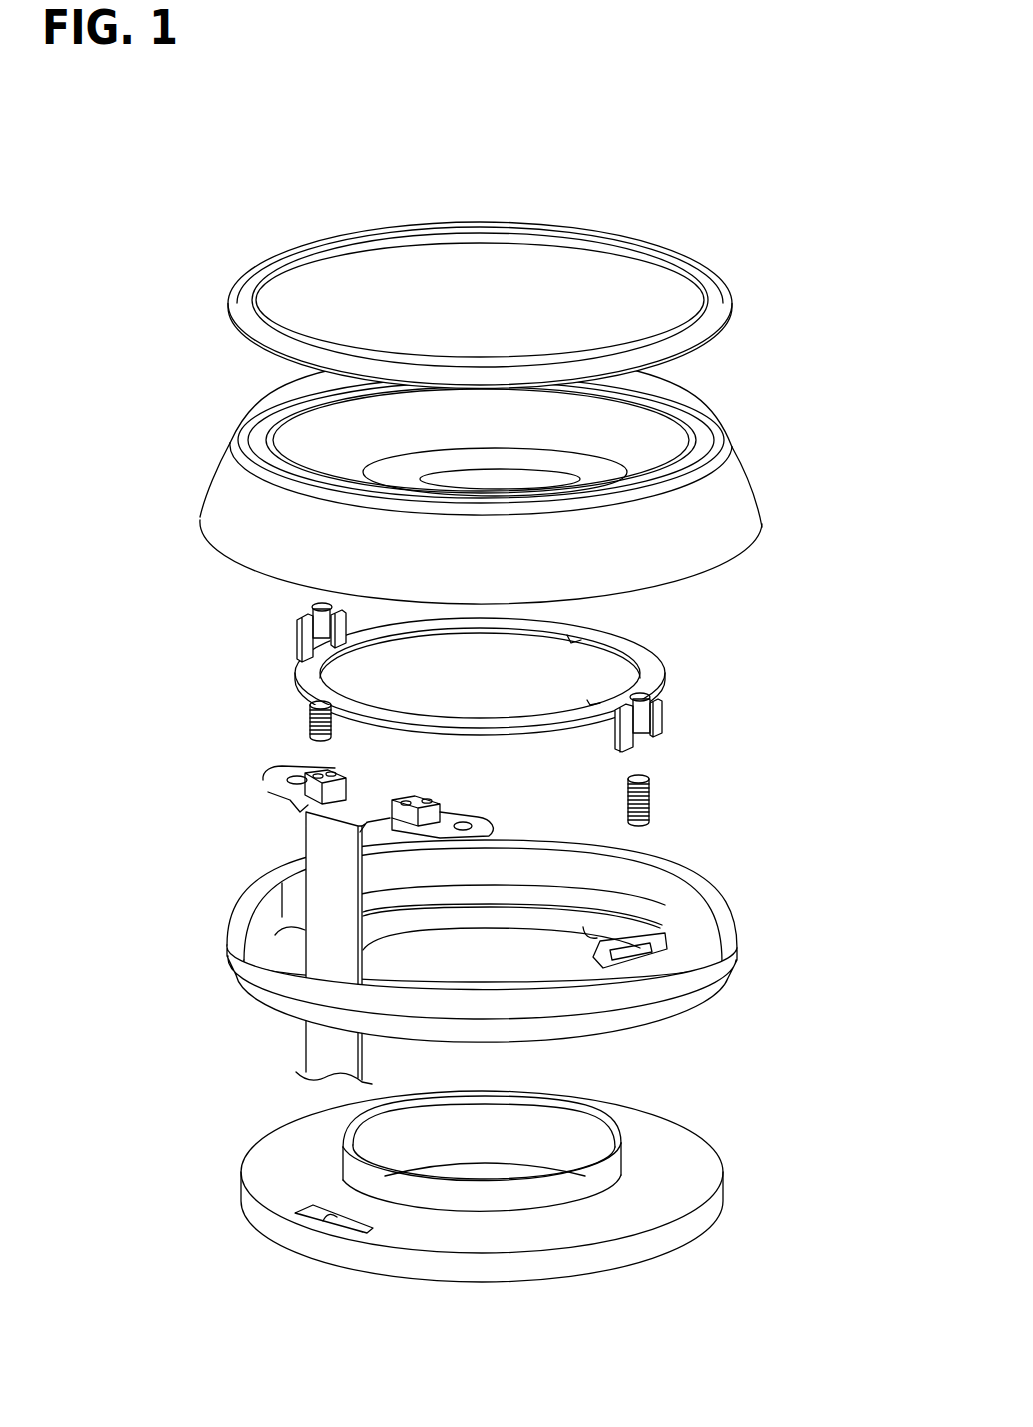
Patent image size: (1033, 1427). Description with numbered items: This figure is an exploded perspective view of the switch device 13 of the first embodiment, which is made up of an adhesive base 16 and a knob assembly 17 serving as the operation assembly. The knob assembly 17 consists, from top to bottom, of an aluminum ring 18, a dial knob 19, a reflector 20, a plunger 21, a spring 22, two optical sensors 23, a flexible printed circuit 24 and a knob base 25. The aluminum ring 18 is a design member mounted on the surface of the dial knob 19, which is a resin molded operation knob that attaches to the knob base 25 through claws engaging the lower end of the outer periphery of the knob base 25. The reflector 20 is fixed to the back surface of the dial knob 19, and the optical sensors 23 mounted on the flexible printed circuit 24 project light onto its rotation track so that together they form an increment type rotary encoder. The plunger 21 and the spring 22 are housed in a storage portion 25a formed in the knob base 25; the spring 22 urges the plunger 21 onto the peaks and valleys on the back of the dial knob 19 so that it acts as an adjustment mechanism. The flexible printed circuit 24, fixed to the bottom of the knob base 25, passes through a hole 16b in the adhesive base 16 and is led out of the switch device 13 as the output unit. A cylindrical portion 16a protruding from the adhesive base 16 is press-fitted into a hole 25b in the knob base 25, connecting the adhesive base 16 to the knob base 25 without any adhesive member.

The switch device 13 is at (514, 183).
The adhesive base 16 is at (532, 1189).
The cylindrical portion 16a is at (600, 1122).
The hole 16b is at (328, 1213).
The knob assembly 17 is at (781, 338).
The aluminum ring 18 is at (620, 233).
The dial knob 19 is at (748, 472).
The reflector 20 is at (648, 655).
The plunger 21 is at (297, 633).
The spring 22 is at (310, 711).
The optical sensor 23 is at (267, 787).
The flexible printed circuit 24 is at (307, 926).
The knob base 25 is at (730, 943).
The storage portion 25a is at (668, 923).
The hole 25b is at (603, 936).